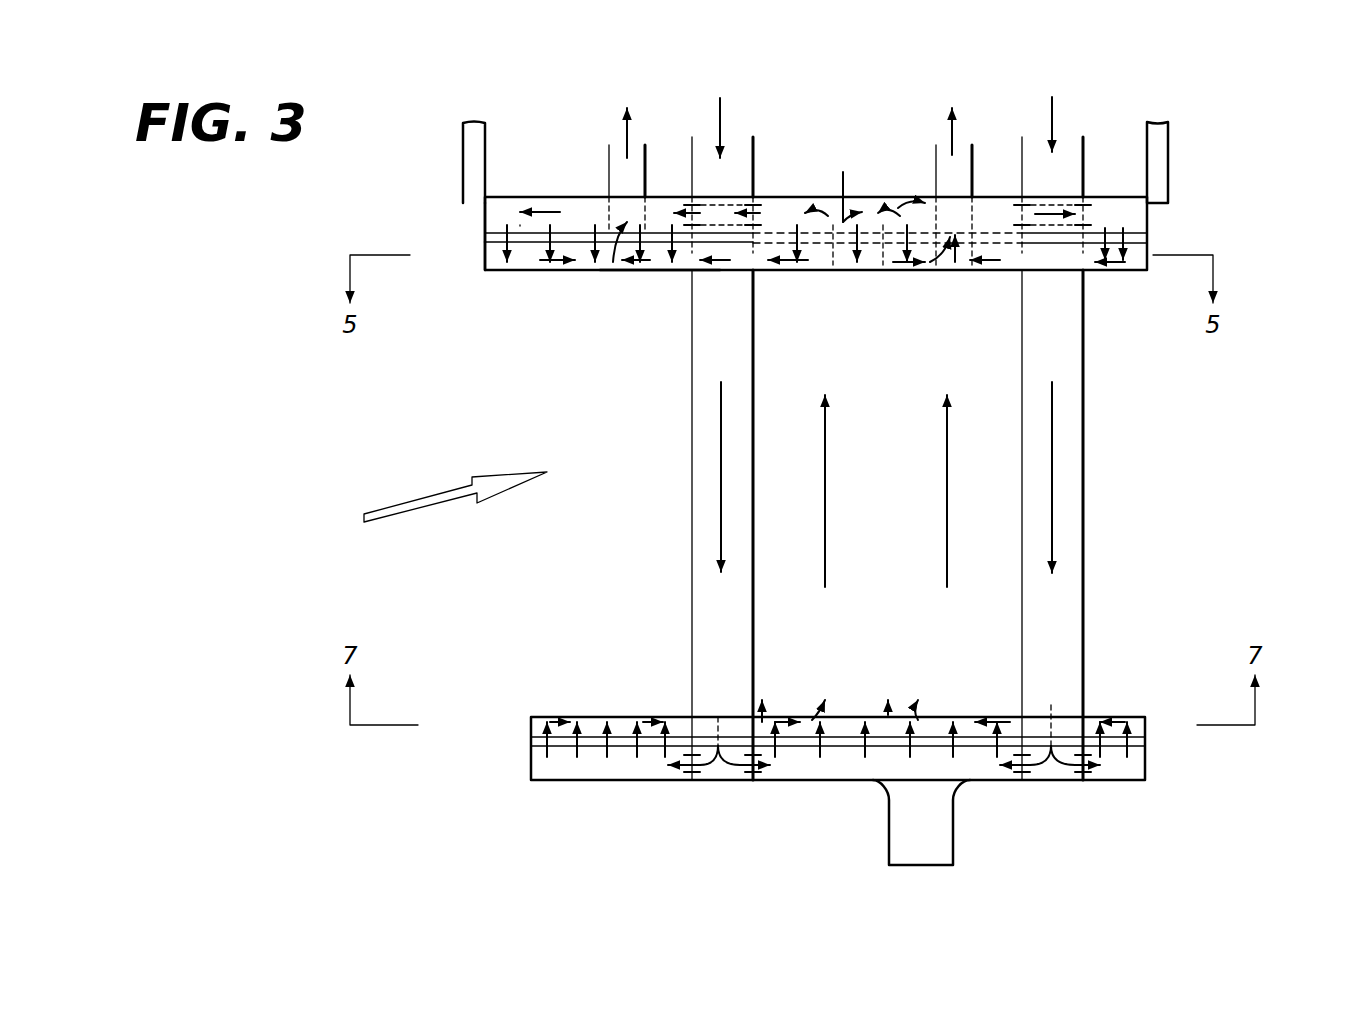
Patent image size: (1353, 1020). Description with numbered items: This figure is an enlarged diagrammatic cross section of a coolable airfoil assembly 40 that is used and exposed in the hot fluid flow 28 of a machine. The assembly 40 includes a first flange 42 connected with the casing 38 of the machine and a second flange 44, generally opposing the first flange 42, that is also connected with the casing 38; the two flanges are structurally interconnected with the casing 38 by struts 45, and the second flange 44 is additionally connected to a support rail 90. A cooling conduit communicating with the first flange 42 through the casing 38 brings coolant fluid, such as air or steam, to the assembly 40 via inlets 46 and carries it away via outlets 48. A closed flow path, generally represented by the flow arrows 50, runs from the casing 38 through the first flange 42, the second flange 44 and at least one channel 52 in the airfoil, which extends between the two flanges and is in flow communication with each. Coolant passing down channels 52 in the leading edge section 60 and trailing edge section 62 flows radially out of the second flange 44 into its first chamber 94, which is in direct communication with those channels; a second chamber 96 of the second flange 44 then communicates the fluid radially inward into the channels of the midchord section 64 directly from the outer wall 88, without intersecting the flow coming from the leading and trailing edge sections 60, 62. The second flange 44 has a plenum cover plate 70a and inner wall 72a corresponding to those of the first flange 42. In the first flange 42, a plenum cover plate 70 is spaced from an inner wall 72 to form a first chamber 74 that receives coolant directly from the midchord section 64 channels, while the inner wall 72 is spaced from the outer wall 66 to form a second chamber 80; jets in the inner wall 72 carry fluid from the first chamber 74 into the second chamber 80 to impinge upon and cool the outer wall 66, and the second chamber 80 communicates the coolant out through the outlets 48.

The hot fluid flow 28 is at (425, 500).
The casing 38 is at (895, 108).
The coolable airfoil assembly 40 is at (575, 122).
The first flange 42 is at (1245, 217).
The second flange 44 is at (1105, 800).
The struts 45 is at (463, 153).
The inlets 46 is at (692, 160).
The outlets 48 is at (609, 152).
The flow arrows 50 is at (722, 108).
The channel 52 is at (1003, 340).
The leading edge section 60 is at (680, 575).
The trailing edge section 62 is at (1100, 407).
The midchord section 64 is at (975, 630).
The outer wall 66 is at (660, 272).
The plenum cover plate 70 is at (545, 198).
The plenum cover plate 70a is at (663, 778).
The inner wall 72 is at (582, 240).
The inner wall 72a is at (806, 740).
The first chamber 74 is at (485, 212).
The second chamber 80 is at (518, 262).
The outer wall 88 is at (628, 717).
The support rail 90 is at (943, 834).
The first chamber 94 is at (583, 770).
The second chamber 96 is at (840, 718).